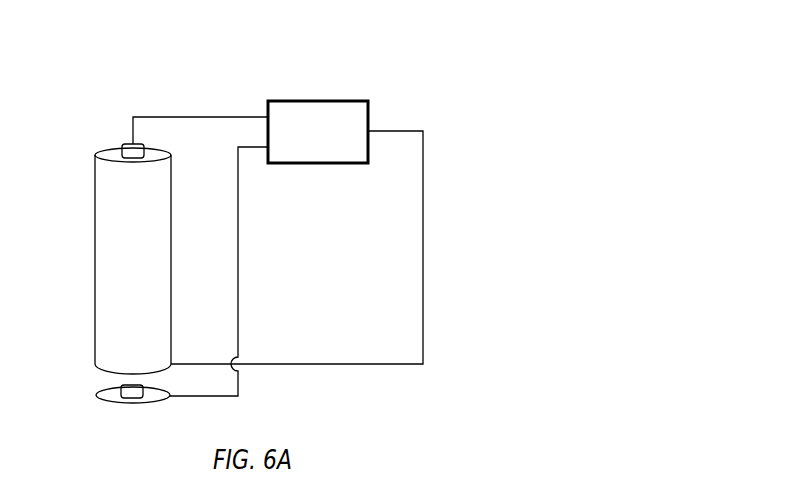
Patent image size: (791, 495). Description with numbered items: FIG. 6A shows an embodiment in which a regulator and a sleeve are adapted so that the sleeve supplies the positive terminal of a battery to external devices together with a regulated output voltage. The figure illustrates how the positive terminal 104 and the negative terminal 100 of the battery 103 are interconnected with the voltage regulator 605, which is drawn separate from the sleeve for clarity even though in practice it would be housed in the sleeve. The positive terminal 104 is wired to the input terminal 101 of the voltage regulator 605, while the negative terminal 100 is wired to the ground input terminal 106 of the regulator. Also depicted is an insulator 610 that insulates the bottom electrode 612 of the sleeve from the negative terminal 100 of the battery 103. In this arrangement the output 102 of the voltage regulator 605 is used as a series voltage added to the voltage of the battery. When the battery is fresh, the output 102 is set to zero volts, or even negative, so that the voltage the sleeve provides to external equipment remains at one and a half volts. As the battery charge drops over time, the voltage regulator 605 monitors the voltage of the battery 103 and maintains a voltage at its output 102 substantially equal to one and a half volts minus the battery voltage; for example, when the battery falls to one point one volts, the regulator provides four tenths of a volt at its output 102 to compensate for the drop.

The negative terminal 100 is at (118, 374).
The input terminal 101 is at (264, 116).
The output terminal 102 is at (371, 130).
The battery 103 is at (95, 262).
The positive terminal 104 is at (127, 144).
The ground input terminal 106 is at (267, 145).
The voltage regulator 605 is at (318, 100).
The insulator 610 is at (133, 385).
The bottom electrode 612 is at (133, 404).